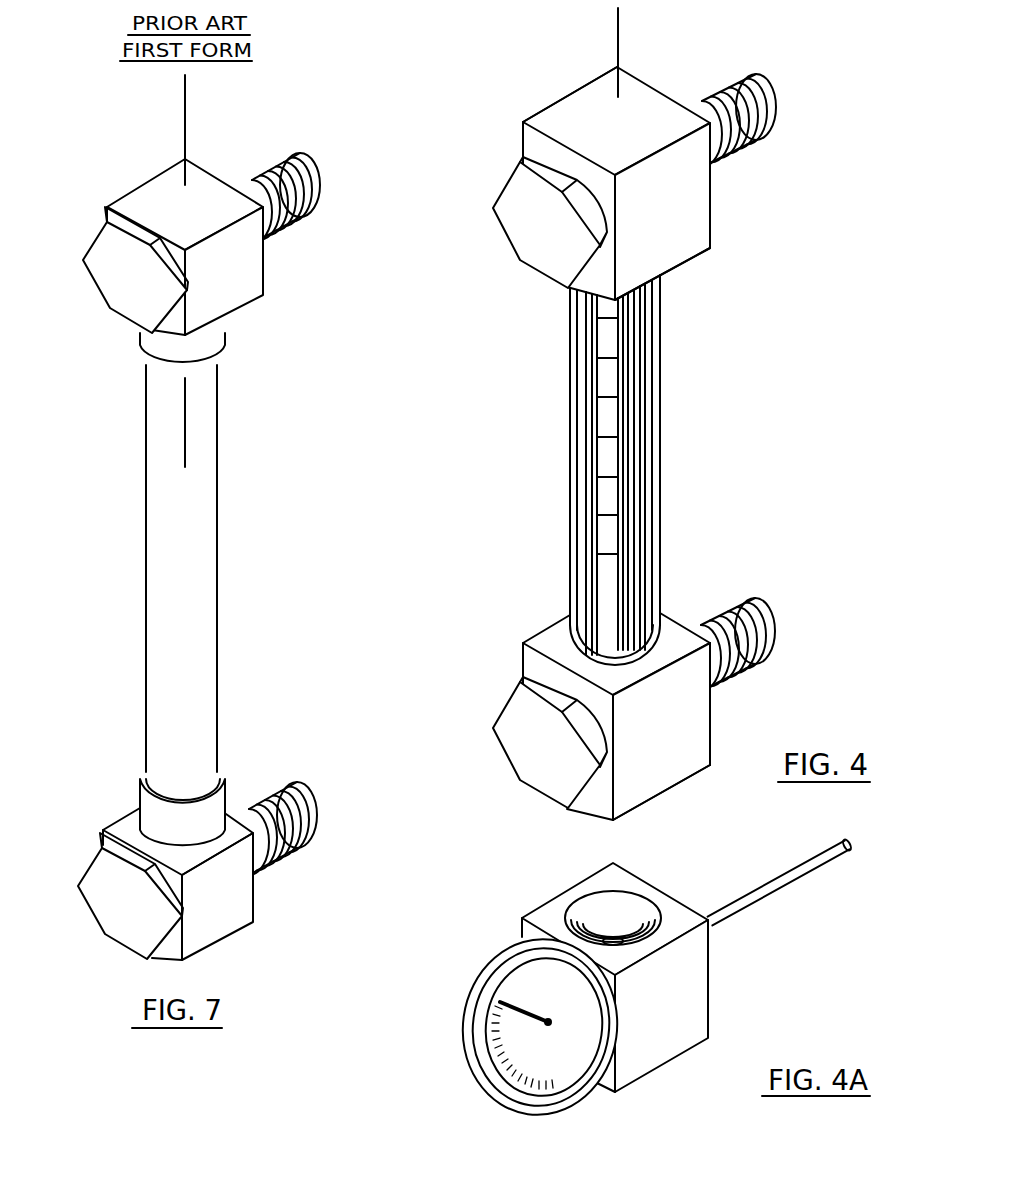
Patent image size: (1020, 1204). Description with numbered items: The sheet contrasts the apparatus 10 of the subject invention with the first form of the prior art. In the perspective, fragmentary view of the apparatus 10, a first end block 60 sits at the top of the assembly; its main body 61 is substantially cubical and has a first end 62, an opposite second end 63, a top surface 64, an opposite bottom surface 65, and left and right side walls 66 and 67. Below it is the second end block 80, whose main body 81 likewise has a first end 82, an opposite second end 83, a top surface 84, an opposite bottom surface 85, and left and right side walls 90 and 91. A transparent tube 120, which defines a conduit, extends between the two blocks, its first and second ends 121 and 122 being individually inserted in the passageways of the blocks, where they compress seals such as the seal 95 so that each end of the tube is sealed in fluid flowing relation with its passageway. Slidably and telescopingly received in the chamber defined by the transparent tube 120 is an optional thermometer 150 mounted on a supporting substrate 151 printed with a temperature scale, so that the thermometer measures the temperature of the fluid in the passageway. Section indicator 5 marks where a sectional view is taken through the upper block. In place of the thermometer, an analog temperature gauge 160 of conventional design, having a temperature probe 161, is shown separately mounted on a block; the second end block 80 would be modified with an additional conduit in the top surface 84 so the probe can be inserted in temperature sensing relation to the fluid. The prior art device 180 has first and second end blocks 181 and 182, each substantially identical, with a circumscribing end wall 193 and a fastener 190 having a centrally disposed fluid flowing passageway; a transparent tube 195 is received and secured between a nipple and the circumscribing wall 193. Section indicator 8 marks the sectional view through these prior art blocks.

In FIG. 7, the first form of prior art fluid level detection device 180 is at (174, 522).
In FIG. 7, the first end block 181 is at (213, 246).
In FIG. 7, the second end block 182 is at (210, 875).
In FIG. 7, the fastener 190 is at (108, 588).
In FIG. 7, the circumscribing end wall 193 is at (220, 589).
In FIG. 7, the transparent tube 195 is at (219, 568).
In FIG. 7, the section line 8- 8 is at (219, 288).
In FIG. 4, the apparatus 10 is at (610, 431).
In FIG. 4, the first end block 60 is at (616, 161).
In FIG. 4, the main body 61 is at (692, 211).
In FIG. 4, the first end 62 is at (616, 98).
In FIG. 4, the second end 63 is at (691, 274).
In FIG. 4, the top surface 64 is at (535, 210).
In FIG. 4, the bottom surface 65 is at (739, 130).
In FIG. 4, the left side wall 66 is at (541, 94).
In FIG. 4, the right side wall 67 is at (670, 238).
In FIG. 4, the first end of transparent tube 121 is at (533, 459).
In FIG. 4, the transparent tube 120 is at (702, 452).
In FIG. 4, the second end of transparent tube 122 is at (645, 609).
In FIG. 4, the thermometer 150 is at (677, 471).
In FIG. 4, the supporting substrate 151 is at (559, 475).
In FIG. 4, the section line 5- 5 is at (655, 212).
In FIG. 4, the second end block 80 is at (609, 712).
In FIG. 4, the main body 81 is at (686, 731).
In FIG. 4, the first end 82 is at (730, 630).
In FIG. 4, the second end 83 is at (662, 800).
In FIG. 4, the top surface 84 is at (528, 731).
In FIG. 4, the bottom surface 85 is at (738, 704).
In FIG. 4, the left side wall 90 is at (588, 641).
In FIG. 4, the right side wall 91 is at (628, 774).
In FIG. 4A, the analog temperature gauge 160 is at (655, 983).
In FIG. 4A, the seal 95 is at (588, 902).
In FIG. 4A, the temperature probe 161 is at (783, 882).